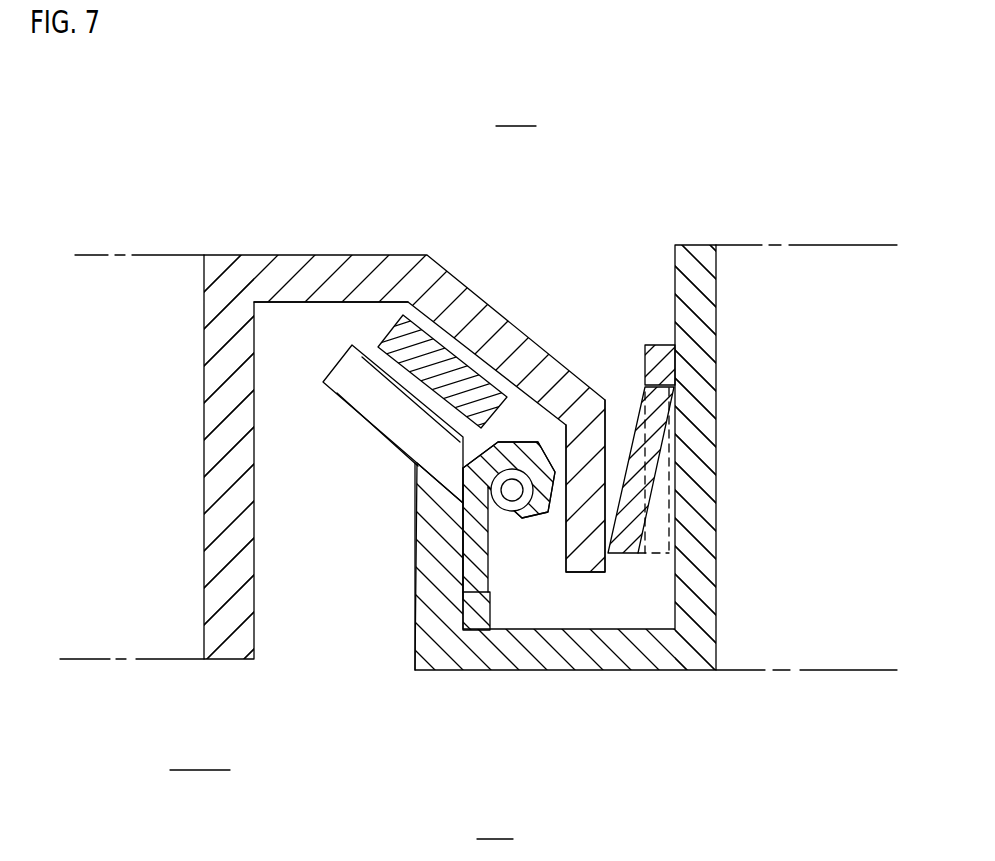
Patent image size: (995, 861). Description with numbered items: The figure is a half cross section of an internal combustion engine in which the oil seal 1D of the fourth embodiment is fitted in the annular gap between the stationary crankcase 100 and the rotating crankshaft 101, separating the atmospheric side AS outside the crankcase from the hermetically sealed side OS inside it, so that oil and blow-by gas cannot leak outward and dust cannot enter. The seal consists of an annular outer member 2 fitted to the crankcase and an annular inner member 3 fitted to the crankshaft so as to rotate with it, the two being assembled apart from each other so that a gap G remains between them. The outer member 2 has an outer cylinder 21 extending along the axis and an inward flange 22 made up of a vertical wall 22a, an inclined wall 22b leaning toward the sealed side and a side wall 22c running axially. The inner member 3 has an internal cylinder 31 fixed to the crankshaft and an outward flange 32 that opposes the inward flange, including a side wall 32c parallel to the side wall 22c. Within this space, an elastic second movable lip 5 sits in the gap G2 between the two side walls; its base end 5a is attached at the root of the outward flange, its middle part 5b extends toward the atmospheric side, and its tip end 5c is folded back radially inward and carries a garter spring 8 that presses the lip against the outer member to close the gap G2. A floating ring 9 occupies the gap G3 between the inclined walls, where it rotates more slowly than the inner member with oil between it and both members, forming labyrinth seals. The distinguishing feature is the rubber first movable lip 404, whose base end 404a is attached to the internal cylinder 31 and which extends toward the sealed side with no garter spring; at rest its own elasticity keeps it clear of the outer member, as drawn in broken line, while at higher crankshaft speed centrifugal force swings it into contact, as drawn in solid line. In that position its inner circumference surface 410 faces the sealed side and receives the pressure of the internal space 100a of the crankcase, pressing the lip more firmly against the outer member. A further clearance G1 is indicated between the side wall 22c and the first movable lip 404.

The oil seal 1D is at (580, 224).
The outer member 2 is at (412, 402).
The outer cylinder 21 is at (255, 337).
The inward flange 22 is at (293, 253).
The vertical wall 22a is at (288, 303).
The inclined wall 22b is at (462, 283).
The side wall 22c is at (603, 432).
The inner member 3 is at (510, 520).
The internal cylinder 31 is at (717, 597).
The outward flange 32 is at (643, 671).
The side wall 32c is at (413, 536).
The second movable lip 5 is at (442, 488).
The base end 5a is at (470, 602).
The middle part 5b is at (465, 512).
The tip end 5c is at (530, 440).
The garter spring 8 is at (513, 512).
The floating ring 9 is at (405, 318).
The crankcase 100 is at (100, 268).
The internal space 100a is at (200, 752).
The crankshaft 101 is at (812, 268).
The first movable lip 404 is at (658, 313).
The base end 404a is at (668, 364).
The inner circumference surface 410 is at (657, 494).
The gap G is at (573, 608).
The gap between flange and lip G1 is at (608, 545).
The gap G2 is at (498, 546).
The gap G3 is at (462, 372).
The atmospheric side AS is at (516, 109).
The hermetically sealed side OS is at (495, 822).